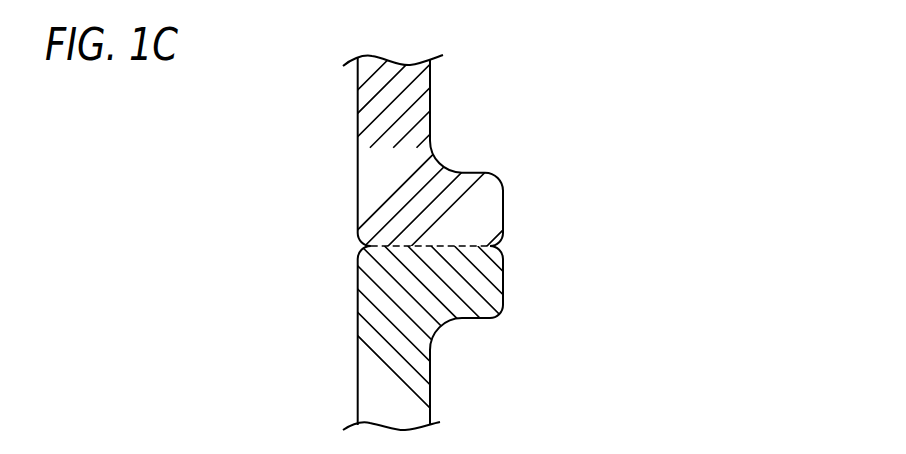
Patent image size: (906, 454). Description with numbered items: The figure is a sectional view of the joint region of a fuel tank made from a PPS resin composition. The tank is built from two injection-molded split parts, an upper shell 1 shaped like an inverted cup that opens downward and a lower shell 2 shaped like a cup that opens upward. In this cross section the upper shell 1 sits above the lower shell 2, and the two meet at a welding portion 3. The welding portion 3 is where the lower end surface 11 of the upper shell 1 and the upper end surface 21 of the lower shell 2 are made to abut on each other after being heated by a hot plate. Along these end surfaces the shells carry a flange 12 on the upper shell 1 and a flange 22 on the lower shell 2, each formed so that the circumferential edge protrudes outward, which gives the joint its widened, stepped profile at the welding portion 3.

The upper shell 1 is at (525, 199).
The lower shell 2 is at (484, 346).
The lower end surface 11 is at (390, 252).
The upper end surface 21 is at (412, 238).
The flange 12 is at (501, 207).
The flange 22 is at (502, 281).
The welding portion 3 is at (545, 243).